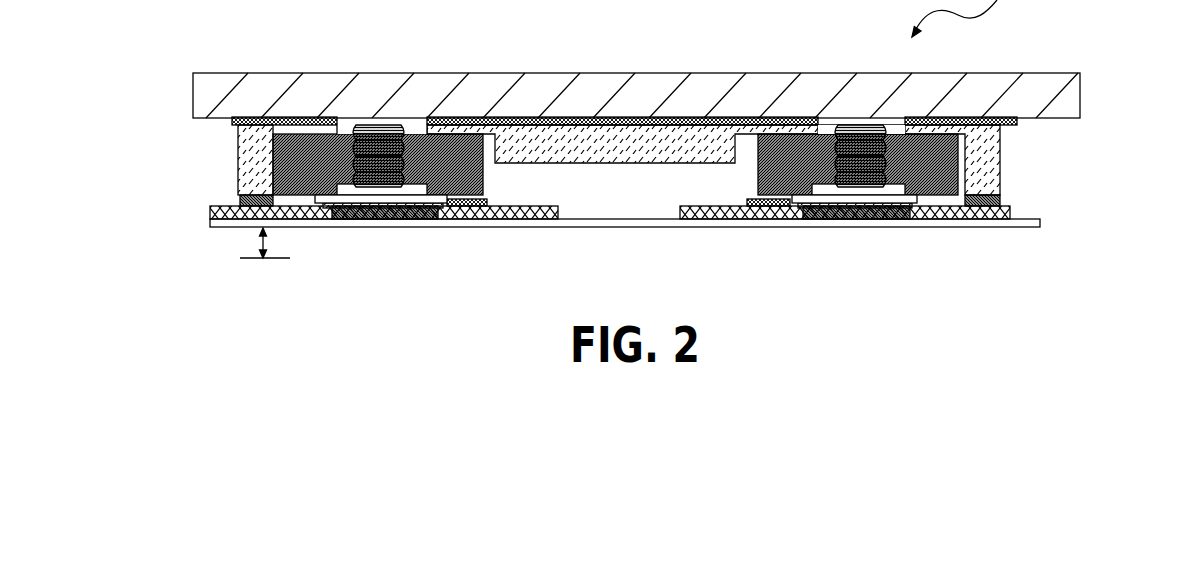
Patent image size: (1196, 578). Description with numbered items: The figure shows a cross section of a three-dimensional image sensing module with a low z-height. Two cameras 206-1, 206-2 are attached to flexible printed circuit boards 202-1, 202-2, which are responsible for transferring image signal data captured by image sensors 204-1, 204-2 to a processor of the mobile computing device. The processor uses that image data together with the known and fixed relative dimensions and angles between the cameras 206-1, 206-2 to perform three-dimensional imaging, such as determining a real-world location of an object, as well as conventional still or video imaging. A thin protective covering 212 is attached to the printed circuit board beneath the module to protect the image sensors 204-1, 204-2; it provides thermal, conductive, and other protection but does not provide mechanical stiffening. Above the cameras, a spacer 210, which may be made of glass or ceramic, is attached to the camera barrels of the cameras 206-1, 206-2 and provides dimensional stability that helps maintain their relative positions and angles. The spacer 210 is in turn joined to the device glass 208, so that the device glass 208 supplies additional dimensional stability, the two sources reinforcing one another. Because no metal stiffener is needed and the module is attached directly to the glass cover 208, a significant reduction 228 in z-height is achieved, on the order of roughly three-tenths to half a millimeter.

The device glass 208 is at (1072, 91).
The spacer 210 is at (992, 146).
The camera 206-1 is at (482, 175).
The camera 206-2 is at (960, 176).
The flexible printed circuit board 202-1 is at (210, 211).
The flexible printed circuit board 202-2 is at (1012, 207).
The image sensor 204-1 is at (403, 219).
The image sensor 204-2 is at (865, 219).
The thin protective covering 212 is at (747, 227).
The reduction in z-height 228 is at (268, 262).